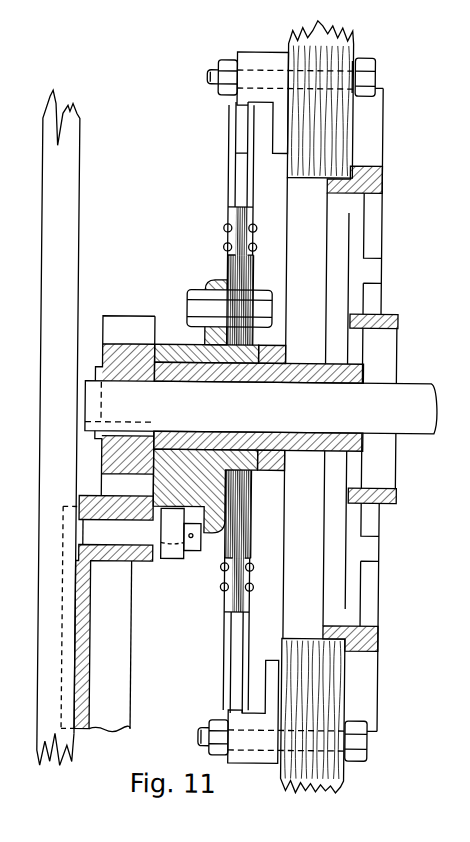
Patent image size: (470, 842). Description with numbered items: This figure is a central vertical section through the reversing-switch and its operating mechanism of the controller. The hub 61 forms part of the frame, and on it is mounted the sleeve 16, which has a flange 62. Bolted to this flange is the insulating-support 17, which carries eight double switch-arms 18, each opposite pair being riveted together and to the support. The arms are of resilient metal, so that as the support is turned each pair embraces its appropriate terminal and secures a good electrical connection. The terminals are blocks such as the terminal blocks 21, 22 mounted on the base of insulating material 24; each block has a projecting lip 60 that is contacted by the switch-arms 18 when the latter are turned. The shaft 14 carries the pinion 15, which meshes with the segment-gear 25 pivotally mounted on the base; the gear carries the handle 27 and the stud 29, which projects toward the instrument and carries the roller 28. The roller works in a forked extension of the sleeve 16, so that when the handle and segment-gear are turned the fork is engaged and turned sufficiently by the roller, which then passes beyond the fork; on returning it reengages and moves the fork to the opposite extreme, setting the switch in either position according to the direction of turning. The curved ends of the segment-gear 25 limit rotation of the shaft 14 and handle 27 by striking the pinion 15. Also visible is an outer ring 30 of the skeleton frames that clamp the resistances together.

The shaft 14 is at (261, 407).
The pinion 15 is at (127, 318).
The sleeve 16 is at (166, 347).
The insulating-support 17 is at (226, 266).
The double switch-arms 18 is at (243, 194).
The terminal block 21 is at (256, 763).
The terminal block 22 is at (252, 52).
The base of insulating material 24 is at (347, 781).
The segment-gear 25 is at (107, 613).
The handle 27 is at (58, 427).
The roller 28 is at (176, 560).
The stud 29 is at (198, 551).
The outer ring 30 is at (381, 646).
The projecting lip 60 is at (240, 139).
The hub 61 is at (204, 391).
The flange 62 is at (207, 282).